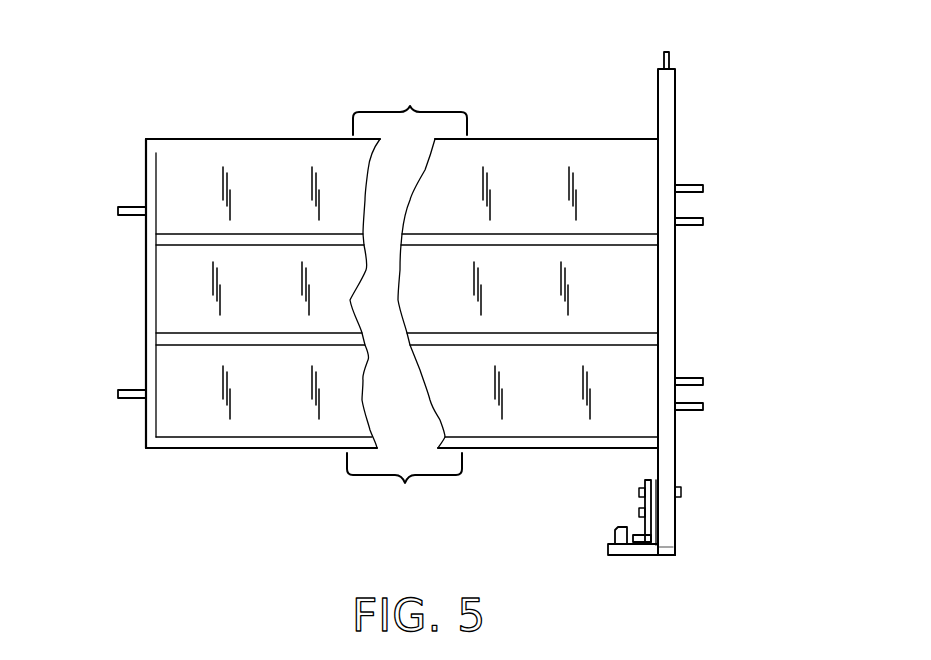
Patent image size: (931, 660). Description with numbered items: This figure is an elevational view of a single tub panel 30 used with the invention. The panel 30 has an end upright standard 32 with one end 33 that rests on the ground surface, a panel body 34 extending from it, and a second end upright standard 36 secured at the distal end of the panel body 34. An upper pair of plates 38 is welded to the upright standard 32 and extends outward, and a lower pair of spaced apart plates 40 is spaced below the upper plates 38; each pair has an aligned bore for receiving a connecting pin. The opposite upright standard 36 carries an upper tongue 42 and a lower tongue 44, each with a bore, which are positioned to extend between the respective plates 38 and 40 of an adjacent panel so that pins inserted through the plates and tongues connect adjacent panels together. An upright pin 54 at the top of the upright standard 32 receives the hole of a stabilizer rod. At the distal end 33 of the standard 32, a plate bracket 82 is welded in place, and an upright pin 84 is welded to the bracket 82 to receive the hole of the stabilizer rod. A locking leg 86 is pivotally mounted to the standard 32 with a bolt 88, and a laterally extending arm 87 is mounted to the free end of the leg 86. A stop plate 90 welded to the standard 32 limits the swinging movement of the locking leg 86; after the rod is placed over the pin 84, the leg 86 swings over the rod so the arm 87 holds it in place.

The panel 30 is at (121, 459).
The end upright standard 32 is at (670, 286).
The end of upright standard 33 is at (667, 559).
The panel body 34 is at (262, 172).
The end upright standard 36 is at (146, 307).
The upper pair of plates 38 is at (703, 188).
The lower pair of spaced apart plates 40 is at (703, 381).
The upper tongue 42 is at (134, 207).
The lower tongue 44 is at (120, 390).
The upright pin 54 is at (669, 53).
The plate bracket 82 is at (628, 553).
The upright pin 84 is at (615, 539).
The locking leg 86 is at (651, 484).
The laterally extending arm 87 is at (641, 542).
The bolt 88 is at (681, 492).
The stop plate 90 is at (640, 512).